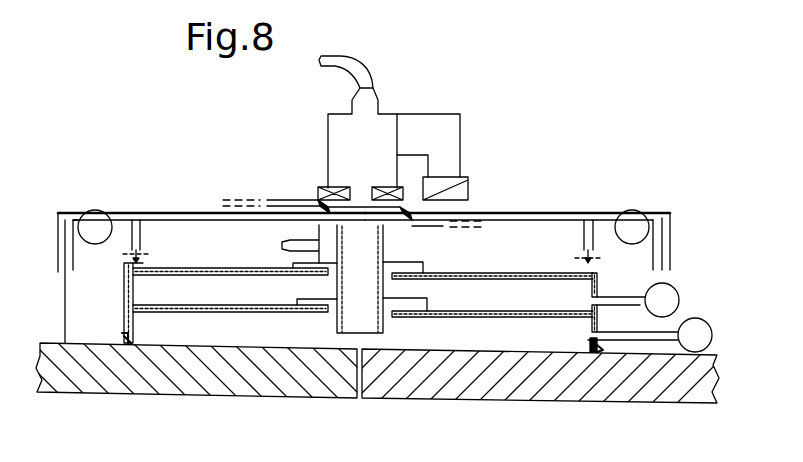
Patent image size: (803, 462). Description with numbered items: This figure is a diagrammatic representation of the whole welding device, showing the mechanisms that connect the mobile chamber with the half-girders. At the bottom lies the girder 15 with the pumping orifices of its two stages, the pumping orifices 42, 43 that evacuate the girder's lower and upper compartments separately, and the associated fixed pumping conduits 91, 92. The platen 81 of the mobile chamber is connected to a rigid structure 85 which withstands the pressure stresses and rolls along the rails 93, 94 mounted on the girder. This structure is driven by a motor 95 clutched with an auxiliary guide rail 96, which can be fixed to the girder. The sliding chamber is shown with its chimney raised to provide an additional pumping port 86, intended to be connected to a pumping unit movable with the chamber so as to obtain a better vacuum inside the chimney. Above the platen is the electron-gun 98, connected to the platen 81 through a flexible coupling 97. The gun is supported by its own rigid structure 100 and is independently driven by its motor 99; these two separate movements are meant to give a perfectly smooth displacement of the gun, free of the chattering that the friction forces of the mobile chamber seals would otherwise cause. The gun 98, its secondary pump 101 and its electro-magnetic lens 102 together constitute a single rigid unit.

The girder 15 is at (190, 268).
The pumping orifice 42 is at (652, 340).
The pumping orifice 43 is at (622, 306).
The platen 81 is at (430, 223).
The rigid structure 85 is at (165, 212).
The pumping port 86 is at (280, 240).
The fixed pumping conduit 91 is at (672, 295).
The fixed pumping conduit 92 is at (711, 330).
The rail 93 is at (125, 262).
The rail 94 is at (585, 270).
The motor 95 is at (93, 210).
The auxiliary guide rail 96 is at (62, 310).
The flexible coupling 97 is at (467, 183).
The electron-gun 98 is at (343, 133).
The motor 99 is at (632, 212).
The rigid structure 100 is at (523, 212).
The secondary pump 101 is at (433, 122).
The electro-magnetic lens 102 is at (322, 188).